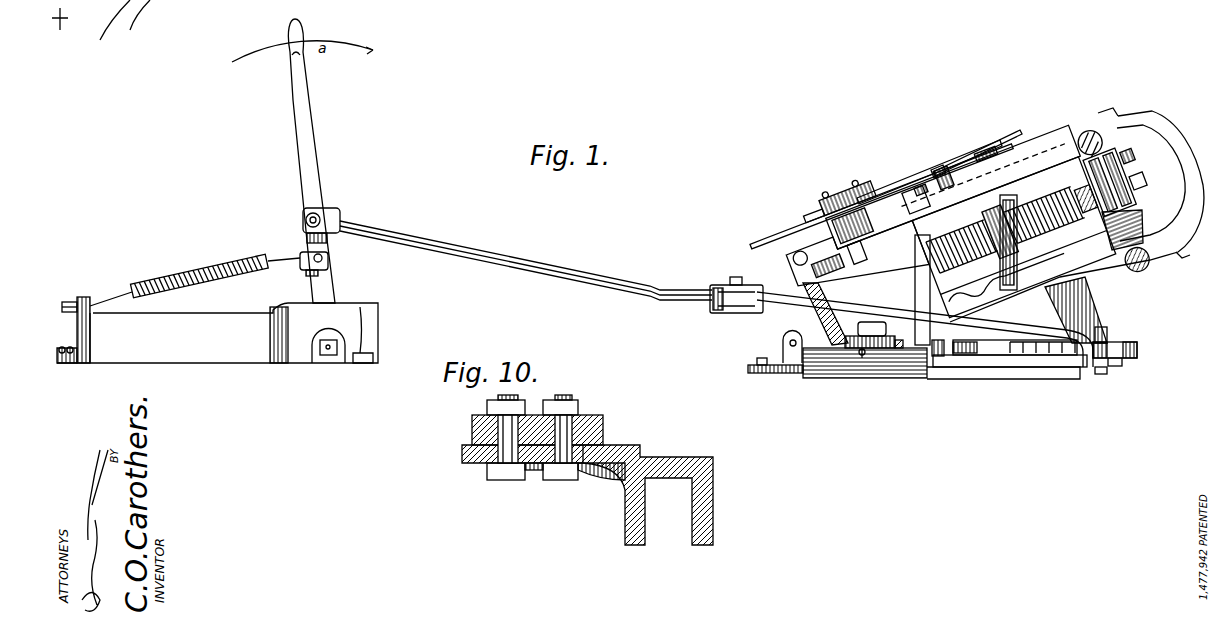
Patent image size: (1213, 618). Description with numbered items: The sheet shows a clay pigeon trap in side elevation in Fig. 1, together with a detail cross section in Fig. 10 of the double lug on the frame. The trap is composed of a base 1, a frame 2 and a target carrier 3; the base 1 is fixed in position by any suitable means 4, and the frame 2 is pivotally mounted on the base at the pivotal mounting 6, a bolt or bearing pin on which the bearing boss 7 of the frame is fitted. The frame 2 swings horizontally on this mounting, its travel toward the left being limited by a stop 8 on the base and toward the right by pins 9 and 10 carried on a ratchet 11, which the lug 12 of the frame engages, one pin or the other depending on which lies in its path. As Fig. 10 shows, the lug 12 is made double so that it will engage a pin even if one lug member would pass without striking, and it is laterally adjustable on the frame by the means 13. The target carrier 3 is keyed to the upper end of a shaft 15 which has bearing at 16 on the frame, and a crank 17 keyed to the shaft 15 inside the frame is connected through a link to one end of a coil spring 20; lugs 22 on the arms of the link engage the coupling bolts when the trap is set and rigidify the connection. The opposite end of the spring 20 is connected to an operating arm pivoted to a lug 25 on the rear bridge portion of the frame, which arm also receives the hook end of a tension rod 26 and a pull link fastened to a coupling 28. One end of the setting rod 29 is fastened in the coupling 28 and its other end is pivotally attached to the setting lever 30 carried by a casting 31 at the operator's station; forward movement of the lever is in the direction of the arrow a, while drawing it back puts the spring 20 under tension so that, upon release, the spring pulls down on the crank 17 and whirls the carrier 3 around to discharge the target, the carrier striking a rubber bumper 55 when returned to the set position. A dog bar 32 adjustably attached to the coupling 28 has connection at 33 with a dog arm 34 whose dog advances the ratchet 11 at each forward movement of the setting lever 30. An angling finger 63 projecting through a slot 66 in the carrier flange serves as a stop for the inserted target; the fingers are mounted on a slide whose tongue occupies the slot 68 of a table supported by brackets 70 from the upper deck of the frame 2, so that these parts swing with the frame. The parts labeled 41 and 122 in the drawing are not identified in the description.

In FIG. 1, the base 1 is at (783, 370).
In FIG. 1, the frame 2 is at (938, 350).
In FIG. 1, the target carrier 3 is at (922, 164).
In FIG. 1, the suitable means 4 is at (760, 358).
In FIG. 1, the pivotal mounting 6 is at (882, 330).
In FIG. 1, the bearing boss 7 is at (903, 344).
In FIG. 1, the stop 8 is at (1108, 240).
In FIG. 1, the pin 9 is at (1107, 335).
In FIG. 1, the pin 10 is at (992, 342).
In FIG. 1, the ratchet 11 is at (1126, 351).
In FIG. 1, the lug 12 is at (1126, 186).
In FIG. 10, the lug 12 is at (670, 458).
In FIG. 1, the wedge support 122 is at (1090, 313).
In FIG. 10, the means 13 is at (562, 432).
In FIG. 1, the shaft 15 is at (1029, 225).
In FIG. 1, the bearing 16 is at (1153, 264).
In FIG. 1, the crank 17 is at (1125, 160).
In FIG. 1, the coil spring 20 is at (959, 240).
In FIG. 1, the lugs 22 is at (1021, 232).
In FIG. 1, the lug 25 is at (980, 281).
In FIG. 1, the tension rod 26 is at (1016, 244).
In FIG. 1, the coupling 28 is at (736, 286).
In FIG. 1, the setting rod 29 is at (595, 281).
In FIG. 1, the setting lever 30 is at (322, 190).
In FIG. 1, the casting 31 is at (365, 310).
In FIG. 1, the dog bar 32 is at (797, 302).
In FIG. 1, the connection 33 is at (1100, 377).
In FIG. 1, the dog arm 34 is at (1125, 367).
In FIG. 1, the body 41 is at (857, 259).
In FIG. 1, the rubber bumper 55 is at (875, 179).
In FIG. 1, the angling finger 63 is at (905, 193).
In FIG. 1, the slot 66 is at (978, 156).
In FIG. 1, the slot 68 is at (860, 361).
In FIG. 1, the brackets 70 is at (953, 187).